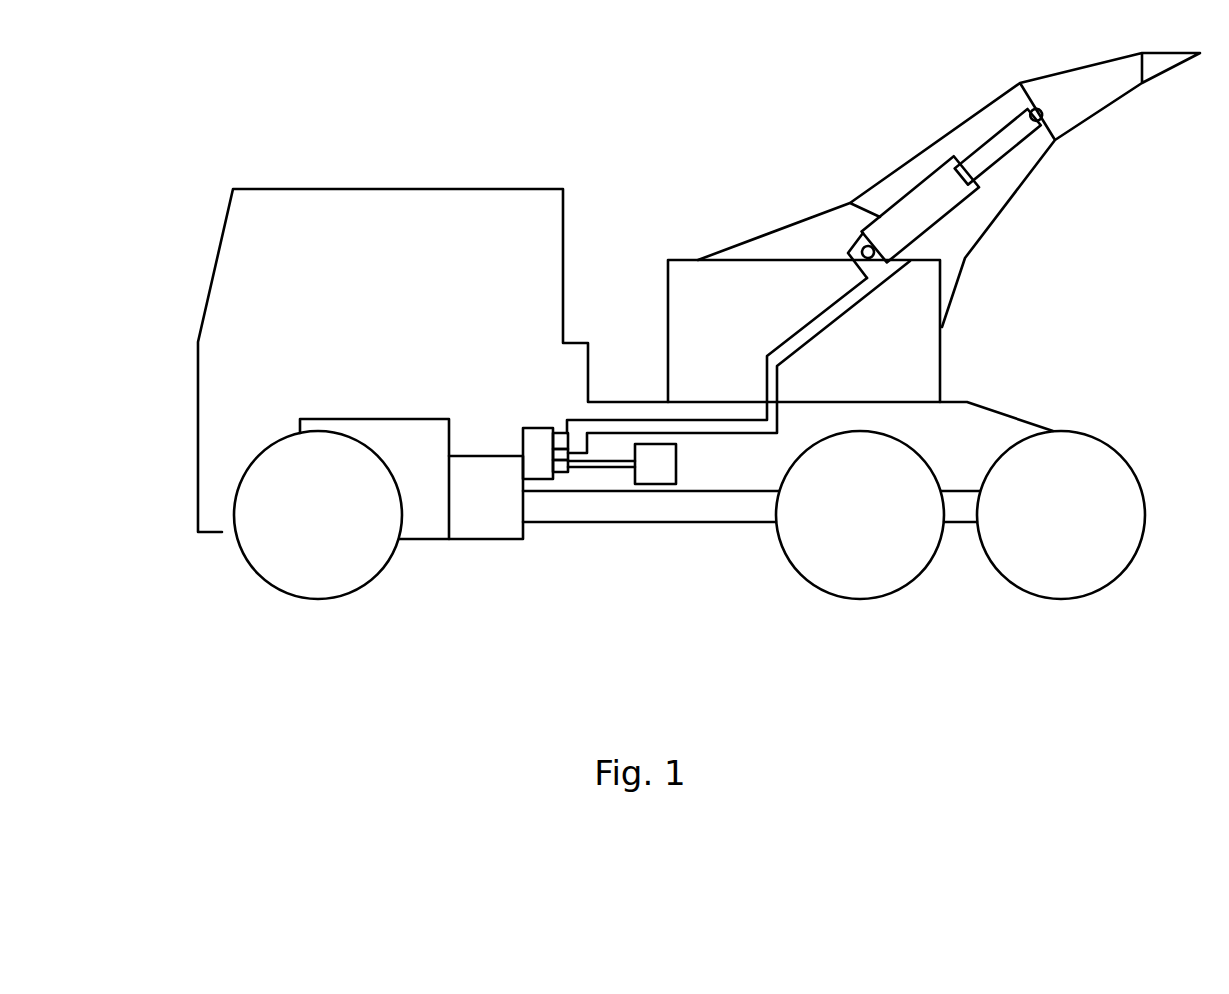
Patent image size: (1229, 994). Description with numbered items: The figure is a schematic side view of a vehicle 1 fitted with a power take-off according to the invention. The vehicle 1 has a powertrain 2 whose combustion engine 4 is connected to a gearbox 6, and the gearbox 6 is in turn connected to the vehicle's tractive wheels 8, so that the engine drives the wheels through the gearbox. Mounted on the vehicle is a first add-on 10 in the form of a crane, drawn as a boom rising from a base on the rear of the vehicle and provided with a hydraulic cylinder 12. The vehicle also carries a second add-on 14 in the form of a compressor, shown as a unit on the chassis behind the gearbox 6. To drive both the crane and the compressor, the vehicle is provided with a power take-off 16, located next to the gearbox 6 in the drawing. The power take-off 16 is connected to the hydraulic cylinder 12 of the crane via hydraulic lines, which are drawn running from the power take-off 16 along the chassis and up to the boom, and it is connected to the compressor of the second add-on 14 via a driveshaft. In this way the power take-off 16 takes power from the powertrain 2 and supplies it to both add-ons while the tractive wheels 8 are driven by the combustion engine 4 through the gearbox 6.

The vehicle 1 is at (568, 118).
The powertrain 2 is at (460, 597).
The combustion engine 4 is at (345, 418).
The gearbox 6 is at (510, 539).
The tractive wheels 8 is at (908, 583).
The first add-on 10 is at (799, 174).
The hydraulic cylinder 12 is at (977, 187).
The second add-on 14 is at (677, 468).
The power take-off 16 is at (522, 428).